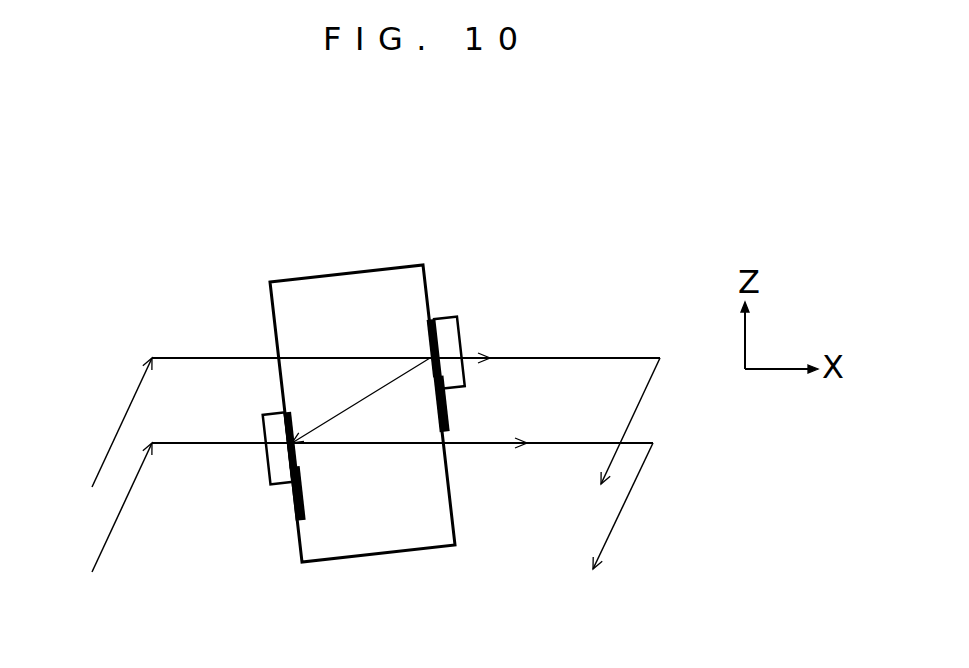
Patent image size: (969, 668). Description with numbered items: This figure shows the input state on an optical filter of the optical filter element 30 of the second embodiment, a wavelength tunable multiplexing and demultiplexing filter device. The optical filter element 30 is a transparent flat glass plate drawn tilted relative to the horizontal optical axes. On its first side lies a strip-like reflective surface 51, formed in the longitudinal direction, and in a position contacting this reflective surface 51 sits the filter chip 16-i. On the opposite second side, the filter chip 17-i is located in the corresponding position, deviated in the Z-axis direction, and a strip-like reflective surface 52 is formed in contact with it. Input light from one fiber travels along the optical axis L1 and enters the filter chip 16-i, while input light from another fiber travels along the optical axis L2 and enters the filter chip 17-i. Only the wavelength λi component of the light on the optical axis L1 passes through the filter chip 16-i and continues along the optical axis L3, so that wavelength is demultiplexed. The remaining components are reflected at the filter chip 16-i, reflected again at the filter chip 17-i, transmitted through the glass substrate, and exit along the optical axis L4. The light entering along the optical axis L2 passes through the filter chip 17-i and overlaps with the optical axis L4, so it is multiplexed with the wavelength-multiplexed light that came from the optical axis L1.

The optical filter element 30 is at (348, 272).
The filter chip 16-i is at (462, 324).
The filter chip 17-i is at (263, 418).
The reflective surface 51 is at (450, 412).
The reflective surface 52 is at (290, 500).
The optical axis L1 is at (177, 356).
The optical axis L2 is at (185, 446).
The optical axis L3 is at (595, 356).
The optical axis L4 is at (551, 446).